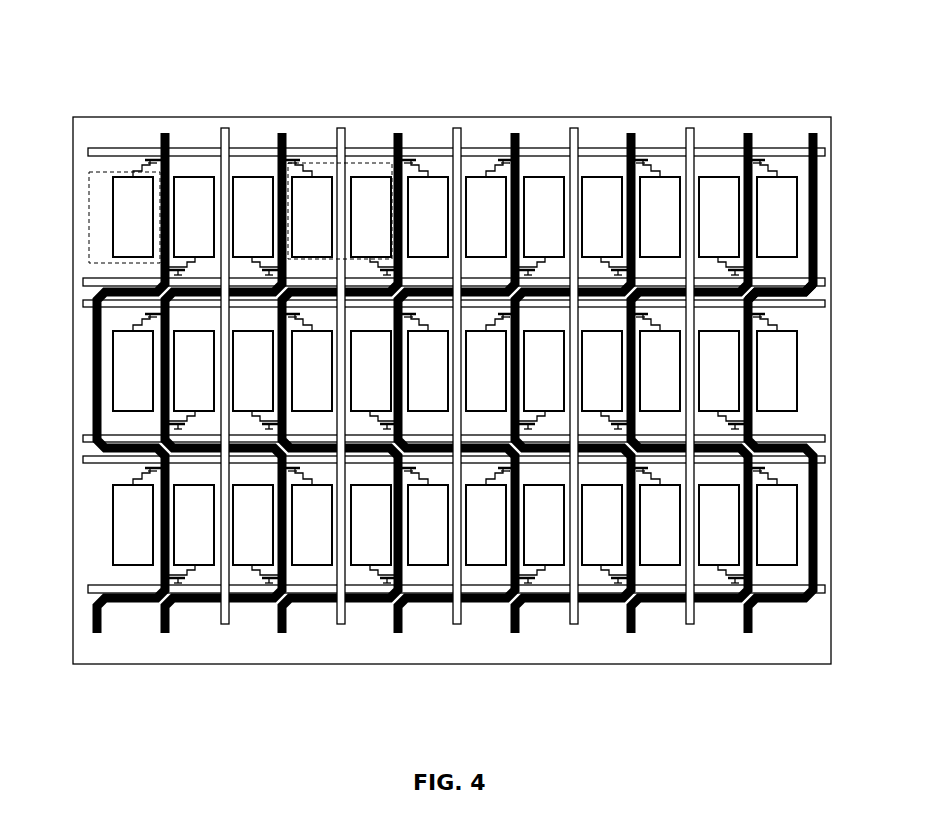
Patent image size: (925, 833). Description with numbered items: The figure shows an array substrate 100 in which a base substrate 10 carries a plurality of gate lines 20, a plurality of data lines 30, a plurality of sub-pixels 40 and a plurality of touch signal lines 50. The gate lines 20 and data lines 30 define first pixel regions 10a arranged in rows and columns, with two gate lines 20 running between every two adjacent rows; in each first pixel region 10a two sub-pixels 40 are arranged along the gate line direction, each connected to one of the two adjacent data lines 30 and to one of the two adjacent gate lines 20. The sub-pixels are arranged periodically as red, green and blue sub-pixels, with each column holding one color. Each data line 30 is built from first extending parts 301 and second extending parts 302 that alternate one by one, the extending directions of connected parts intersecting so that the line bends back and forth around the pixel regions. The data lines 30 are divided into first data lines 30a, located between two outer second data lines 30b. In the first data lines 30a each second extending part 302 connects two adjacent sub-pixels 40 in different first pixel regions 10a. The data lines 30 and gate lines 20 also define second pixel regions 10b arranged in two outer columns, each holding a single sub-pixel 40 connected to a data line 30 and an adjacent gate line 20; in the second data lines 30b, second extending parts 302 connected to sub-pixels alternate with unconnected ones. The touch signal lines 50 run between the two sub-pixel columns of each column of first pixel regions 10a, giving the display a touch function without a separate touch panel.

The array substrate 100 is at (50, 23).
The base substrate 10 is at (99, 127).
The first pixel region 10a is at (362, 177).
The second pixel region 10b is at (128, 171).
The gate line 20 is at (257, 148).
The data line 30 is at (197, 711).
The first data line 30a is at (168, 635).
The second data line 30b is at (479, 423).
The first extending part 301 is at (792, 295).
The second extending part 302 is at (877, 272).
The sub-pixel 40 is at (324, 176).
The touch signal line 50 is at (342, 131).